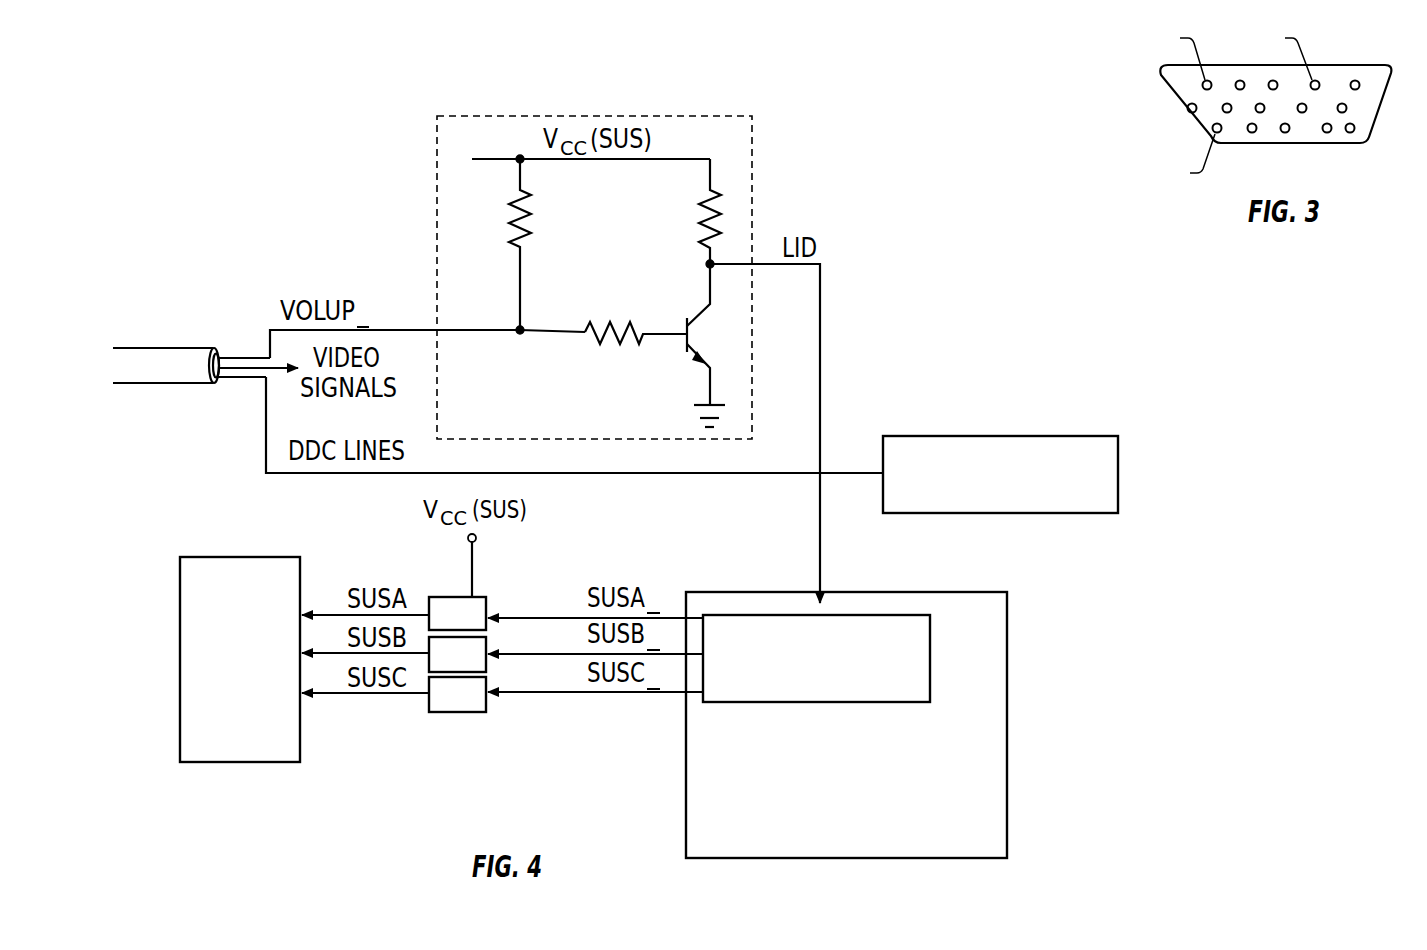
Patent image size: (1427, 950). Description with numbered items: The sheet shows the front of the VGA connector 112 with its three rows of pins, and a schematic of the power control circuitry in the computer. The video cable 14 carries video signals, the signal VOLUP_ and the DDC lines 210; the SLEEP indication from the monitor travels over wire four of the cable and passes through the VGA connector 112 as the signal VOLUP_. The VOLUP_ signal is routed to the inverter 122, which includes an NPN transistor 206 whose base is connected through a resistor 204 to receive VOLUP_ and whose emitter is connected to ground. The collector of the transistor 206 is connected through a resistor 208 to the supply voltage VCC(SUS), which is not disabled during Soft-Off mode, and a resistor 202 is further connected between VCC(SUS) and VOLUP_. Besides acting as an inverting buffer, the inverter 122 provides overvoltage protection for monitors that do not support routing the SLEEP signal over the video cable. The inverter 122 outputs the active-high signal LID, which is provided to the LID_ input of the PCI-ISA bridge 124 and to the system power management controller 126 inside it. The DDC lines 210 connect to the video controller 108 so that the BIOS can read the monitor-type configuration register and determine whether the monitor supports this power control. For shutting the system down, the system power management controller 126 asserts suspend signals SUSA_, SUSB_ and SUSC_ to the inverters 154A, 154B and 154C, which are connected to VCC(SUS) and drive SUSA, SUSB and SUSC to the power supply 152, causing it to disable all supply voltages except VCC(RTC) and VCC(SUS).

In FIG. 3, the VGA connector 112 is at (1339, 144).
In FIG. 4, the video cable 14 is at (150, 347).
In FIG. 4, the inverter 122 is at (633, 116).
In FIG. 4, the resistor 202 is at (531, 226).
In FIG. 4, the resistor 208 is at (697, 212).
In FIG. 4, the resistor 204 is at (620, 322).
In FIG. 4, the NPN transistor 206 is at (688, 332).
In FIG. 4, the DDC lines 210 is at (620, 474).
In FIG. 4, the video controller 108 is at (1087, 436).
In FIG. 4, the power supply 152 is at (213, 763).
In FIG. 4, the inverter 154A is at (453, 596).
In FIG. 4, the inverter 154B is at (488, 664).
In FIG. 4, the inverter 154C is at (455, 713).
In FIG. 4, the PCI-ISA bridge 124 is at (1008, 705).
In FIG. 4, the system power management controller 126 is at (931, 657).